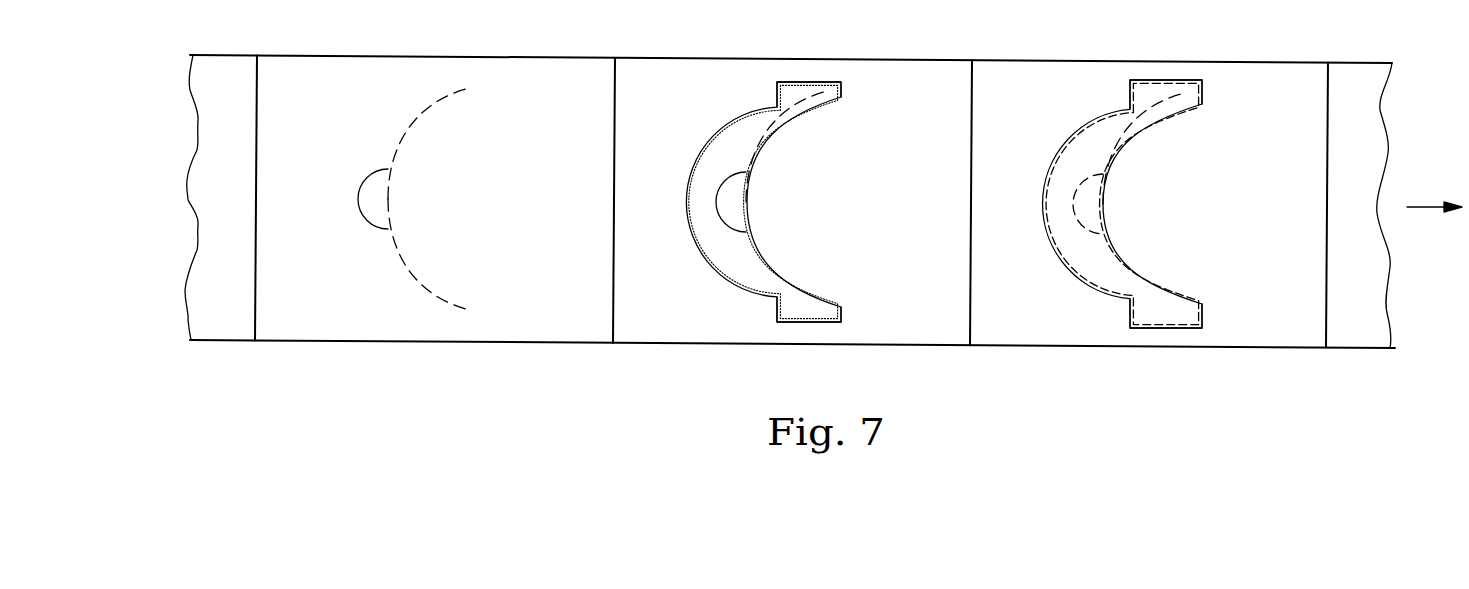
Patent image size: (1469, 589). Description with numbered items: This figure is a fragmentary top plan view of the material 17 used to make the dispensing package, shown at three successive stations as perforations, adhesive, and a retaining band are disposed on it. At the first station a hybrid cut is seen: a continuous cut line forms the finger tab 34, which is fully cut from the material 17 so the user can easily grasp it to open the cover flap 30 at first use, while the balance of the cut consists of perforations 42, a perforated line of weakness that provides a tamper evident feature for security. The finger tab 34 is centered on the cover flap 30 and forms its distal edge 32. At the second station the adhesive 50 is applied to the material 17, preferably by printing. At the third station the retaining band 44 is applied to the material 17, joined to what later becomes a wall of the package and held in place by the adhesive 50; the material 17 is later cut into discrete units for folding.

The material 17 is at (207, 142).
The cover flap 30 is at (457, 140).
The distal edge 32 is at (397, 145).
The finger tab 34 is at (365, 222).
The perforations 42 is at (445, 302).
The retaining band 44 is at (1203, 316).
The adhesive 50 is at (775, 312).